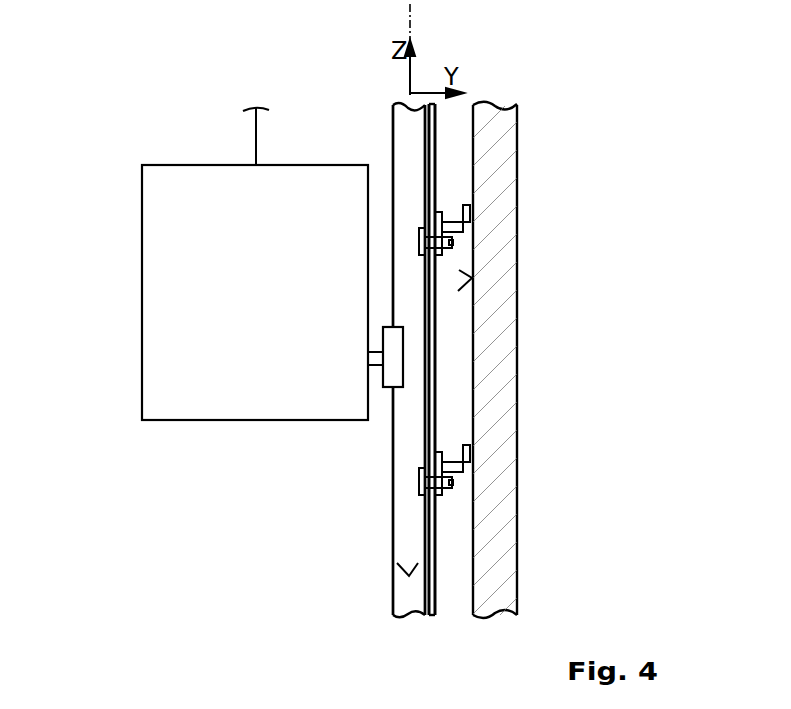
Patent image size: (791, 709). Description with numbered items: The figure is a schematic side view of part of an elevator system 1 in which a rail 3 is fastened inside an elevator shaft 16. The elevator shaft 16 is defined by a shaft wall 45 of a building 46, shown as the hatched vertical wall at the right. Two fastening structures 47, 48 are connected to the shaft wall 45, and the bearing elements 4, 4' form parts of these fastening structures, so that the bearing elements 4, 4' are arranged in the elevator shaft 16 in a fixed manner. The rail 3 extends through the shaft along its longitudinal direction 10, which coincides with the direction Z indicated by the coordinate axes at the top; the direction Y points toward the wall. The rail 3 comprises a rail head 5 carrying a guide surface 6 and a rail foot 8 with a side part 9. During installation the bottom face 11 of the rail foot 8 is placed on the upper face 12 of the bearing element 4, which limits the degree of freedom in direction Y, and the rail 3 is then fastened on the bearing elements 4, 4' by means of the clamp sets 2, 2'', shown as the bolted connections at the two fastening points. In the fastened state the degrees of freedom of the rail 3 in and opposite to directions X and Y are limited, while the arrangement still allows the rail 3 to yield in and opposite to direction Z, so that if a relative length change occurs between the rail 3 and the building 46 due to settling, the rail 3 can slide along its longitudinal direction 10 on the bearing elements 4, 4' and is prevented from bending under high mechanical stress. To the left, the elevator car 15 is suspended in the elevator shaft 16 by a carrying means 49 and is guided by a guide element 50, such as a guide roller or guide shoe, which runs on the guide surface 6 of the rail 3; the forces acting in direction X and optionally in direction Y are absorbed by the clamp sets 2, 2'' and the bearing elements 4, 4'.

The elevator system 1 is at (42, 141).
The clamp set 2 is at (396, 483).
The clamp set 2'' is at (391, 245).
The rail 3 is at (408, 533).
The bearing element 4 is at (508, 488).
The bearing element 4' is at (511, 250).
The rail head 5 is at (408, 533).
The guide surface 6 is at (400, 575).
The rail foot 8 is at (431, 587).
The side part 9 is at (431, 587).
The longitudinal direction 10 is at (410, 16).
The bottom face 11 is at (447, 147).
The upper face 12 is at (421, 460).
The elevator car 15 is at (142, 295).
The elevator shaft 16 is at (262, 544).
The shaft wall 45 is at (473, 287).
The building 46 is at (505, 171).
The fastening structure 47 is at (452, 466).
The fastening structure 48 is at (452, 226).
The carrying means 49 is at (256, 136).
The guide element 50 is at (383, 377).